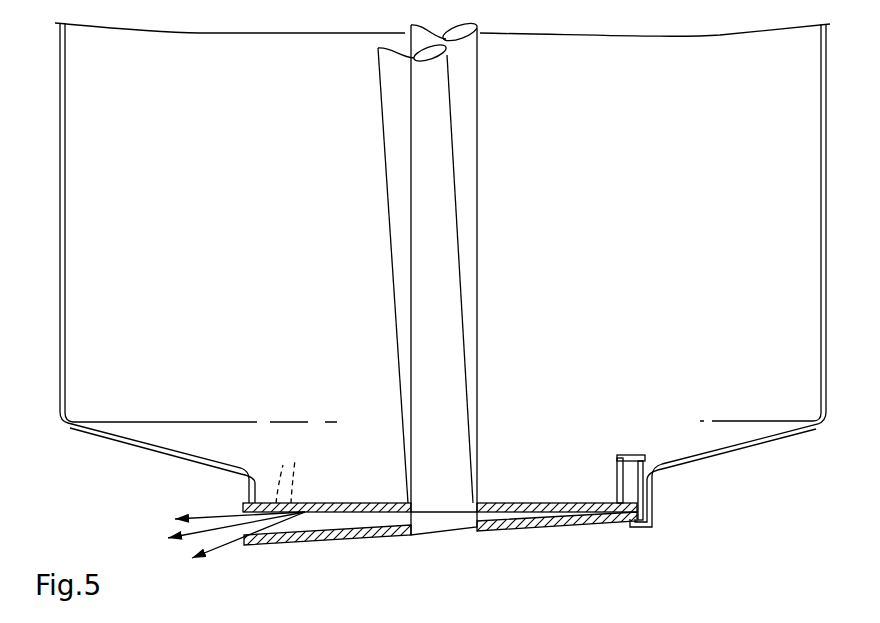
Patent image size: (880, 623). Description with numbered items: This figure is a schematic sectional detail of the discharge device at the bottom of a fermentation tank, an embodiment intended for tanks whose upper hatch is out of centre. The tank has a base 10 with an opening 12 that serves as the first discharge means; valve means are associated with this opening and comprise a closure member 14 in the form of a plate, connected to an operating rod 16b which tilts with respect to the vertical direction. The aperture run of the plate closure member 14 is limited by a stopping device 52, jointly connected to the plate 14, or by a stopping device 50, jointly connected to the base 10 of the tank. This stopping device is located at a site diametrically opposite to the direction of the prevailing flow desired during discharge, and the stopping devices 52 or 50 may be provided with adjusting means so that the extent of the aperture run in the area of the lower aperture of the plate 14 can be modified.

The base 10 is at (778, 441).
The opening 12 is at (258, 503).
The closure member 14 is at (585, 511).
The rod 16b is at (453, 347).
The stopping device 50 is at (658, 507).
The stopping device 52 is at (636, 455).